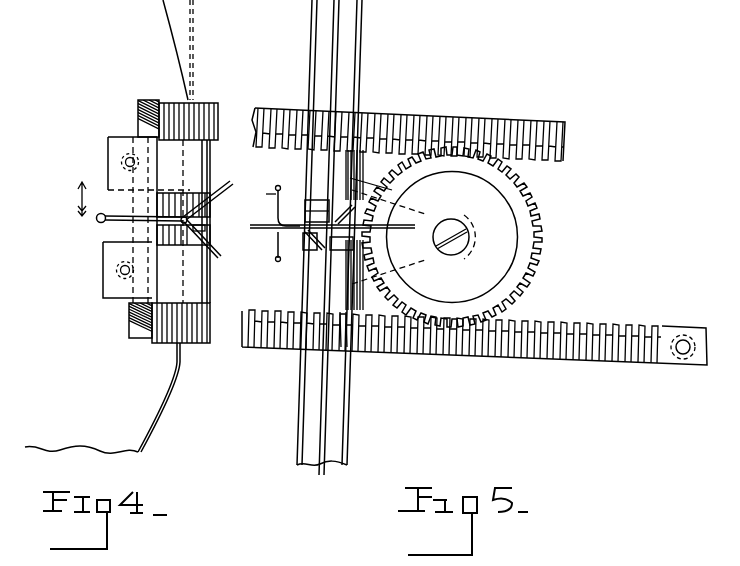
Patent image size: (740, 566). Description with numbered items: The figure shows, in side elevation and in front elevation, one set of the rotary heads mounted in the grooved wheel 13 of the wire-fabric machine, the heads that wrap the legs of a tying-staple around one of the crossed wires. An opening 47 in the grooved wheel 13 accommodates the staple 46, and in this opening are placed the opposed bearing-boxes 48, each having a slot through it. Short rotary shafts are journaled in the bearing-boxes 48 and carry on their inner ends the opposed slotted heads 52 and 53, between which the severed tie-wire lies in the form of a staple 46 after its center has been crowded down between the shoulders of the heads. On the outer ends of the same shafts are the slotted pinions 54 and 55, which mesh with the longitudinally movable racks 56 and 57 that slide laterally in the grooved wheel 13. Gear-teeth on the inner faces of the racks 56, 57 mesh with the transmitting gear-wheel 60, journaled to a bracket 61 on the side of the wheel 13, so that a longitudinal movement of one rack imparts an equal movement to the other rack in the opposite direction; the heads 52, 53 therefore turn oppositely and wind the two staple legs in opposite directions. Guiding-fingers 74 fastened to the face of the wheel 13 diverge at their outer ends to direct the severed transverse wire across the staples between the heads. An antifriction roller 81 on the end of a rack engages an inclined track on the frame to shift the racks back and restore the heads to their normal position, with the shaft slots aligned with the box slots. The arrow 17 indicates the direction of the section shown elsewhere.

In FIG. 4, the grooved wheel 13 is at (142, 50).
In FIG. 5, the grooved wheel 13 is at (361, 22).
In FIG. 4, the direction of movement 17 is at (108, 190).
In FIG. 5, the direction of movement 17 is at (262, 194).
In FIG. 4, the staple 46 is at (206, 231).
In FIG. 4, the opening 47 is at (146, 216).
In FIG. 5, the opening 47 is at (332, 215).
In FIG. 4, the bearing-box 48 is at (117, 153).
In FIG. 5, the bearing-box 48 is at (358, 298).
In FIG. 4, the slotted head 52 is at (174, 238).
In FIG. 5, the slotted head 52 is at (300, 243).
In FIG. 4, the slotted head 53 is at (212, 206).
In FIG. 5, the slotted head 53 is at (312, 203).
In FIG. 4, the slotted pinion 54 is at (215, 105).
In FIG. 5, the slotted pinion 54 is at (366, 110).
In FIG. 4, the slotted pinion 55 is at (200, 344).
In FIG. 5, the slotted pinion 55 is at (356, 345).
In FIG. 4, the rack 56 is at (129, 322).
In FIG. 5, the rack 56 is at (538, 358).
In FIG. 4, the rack 57 is at (140, 107).
In FIG. 5, the rack 57 is at (527, 118).
In FIG. 5, the transmitting gear-wheel 60 is at (452, 237).
In FIG. 5, the bracket 61 is at (352, 287).
In FIG. 4, the guiding-finger 74 is at (231, 182).
In FIG. 5, the guiding-finger 74 is at (288, 210).
In FIG. 5, the antifriction roller 81 is at (684, 356).